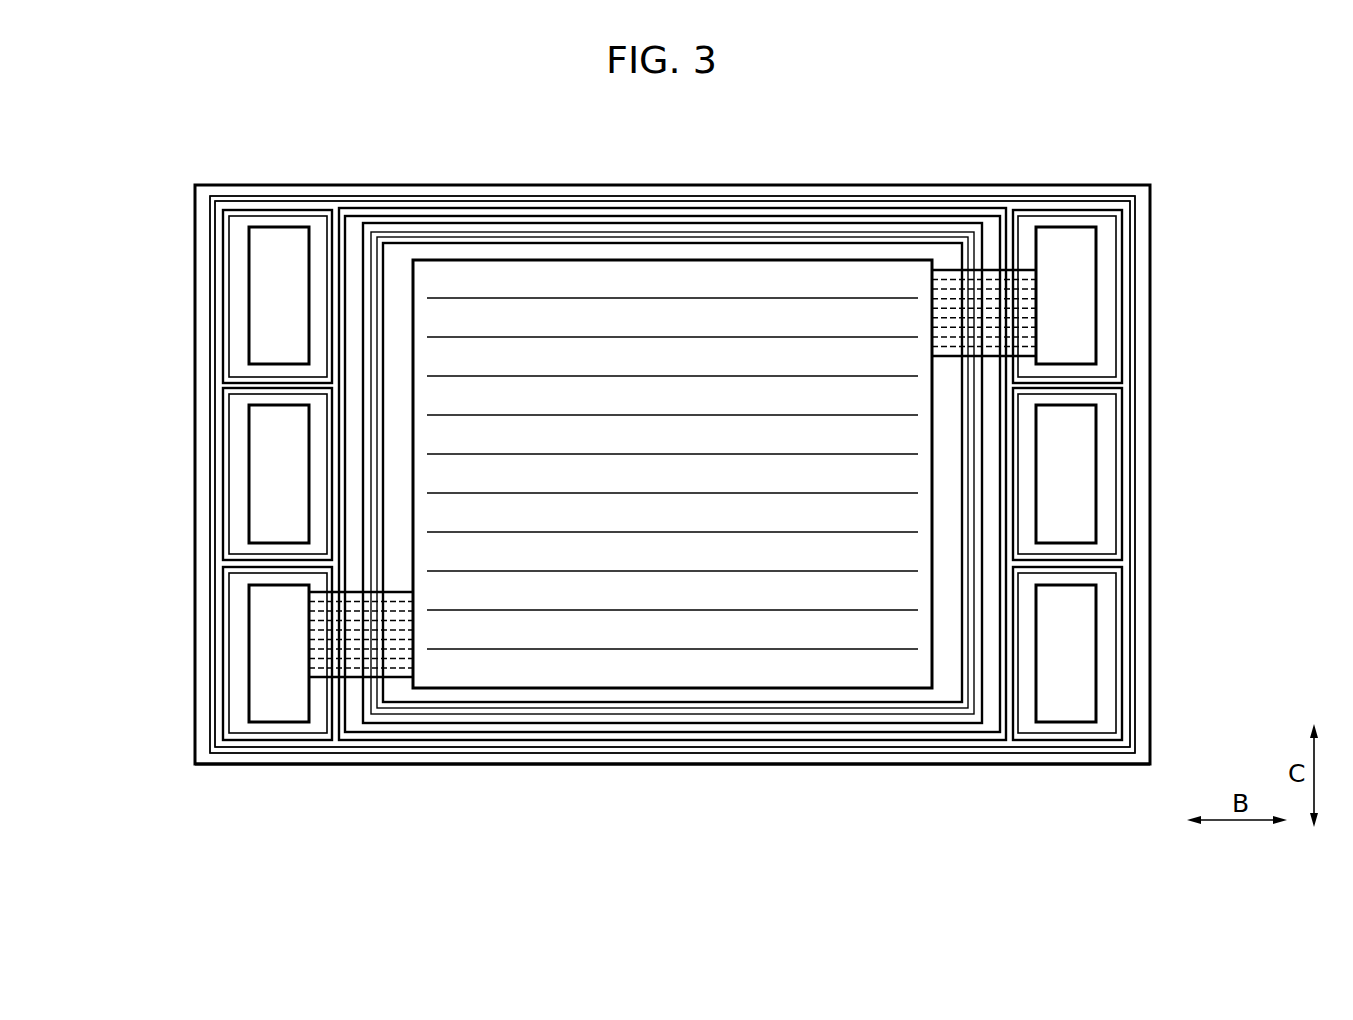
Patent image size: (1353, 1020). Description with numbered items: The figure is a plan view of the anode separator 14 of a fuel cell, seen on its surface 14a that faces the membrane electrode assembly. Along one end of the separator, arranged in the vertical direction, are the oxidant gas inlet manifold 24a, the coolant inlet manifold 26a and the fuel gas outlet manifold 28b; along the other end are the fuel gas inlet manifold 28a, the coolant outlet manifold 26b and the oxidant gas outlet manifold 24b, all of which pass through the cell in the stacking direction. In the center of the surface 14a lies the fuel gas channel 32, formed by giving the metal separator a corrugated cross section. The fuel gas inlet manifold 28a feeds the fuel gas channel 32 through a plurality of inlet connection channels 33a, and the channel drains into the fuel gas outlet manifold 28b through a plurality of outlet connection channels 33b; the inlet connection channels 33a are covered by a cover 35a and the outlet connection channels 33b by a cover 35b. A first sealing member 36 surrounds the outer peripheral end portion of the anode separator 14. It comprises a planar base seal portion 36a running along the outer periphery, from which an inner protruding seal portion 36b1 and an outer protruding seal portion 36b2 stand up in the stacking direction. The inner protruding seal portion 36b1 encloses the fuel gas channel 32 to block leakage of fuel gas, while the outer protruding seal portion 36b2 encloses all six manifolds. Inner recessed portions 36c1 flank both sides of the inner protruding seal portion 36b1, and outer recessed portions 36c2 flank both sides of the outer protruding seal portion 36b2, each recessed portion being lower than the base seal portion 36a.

The anode separator 14 is at (755, 110).
The surface of the anode separator 14a is at (1023, 762).
The oxidant gas inlet manifold 24a is at (272, 337).
The oxidant gas outlet manifold 24b is at (1083, 697).
The coolant inlet manifold 26a is at (256, 463).
The coolant outlet manifold 26b is at (1093, 478).
The fuel gas inlet manifold 28a is at (1083, 336).
The fuel gas outlet manifold 28b is at (272, 697).
The fuel gas channel 32 is at (548, 323).
The inlet connection channels 33a is at (950, 280).
The outlet connection channels 33b is at (395, 666).
The cover 35a is at (1027, 270).
The cover 35b is at (318, 678).
The first sealing member 36 is at (853, 764).
The base seal portion 36a is at (960, 758).
The inner protruding seal portion 36b1 is at (727, 711).
The outer protruding seal portion 36b2 is at (569, 743).
The inner recessed portions 36c1 is at (708, 703).
The outer recessed portions 36c2 is at (538, 735).